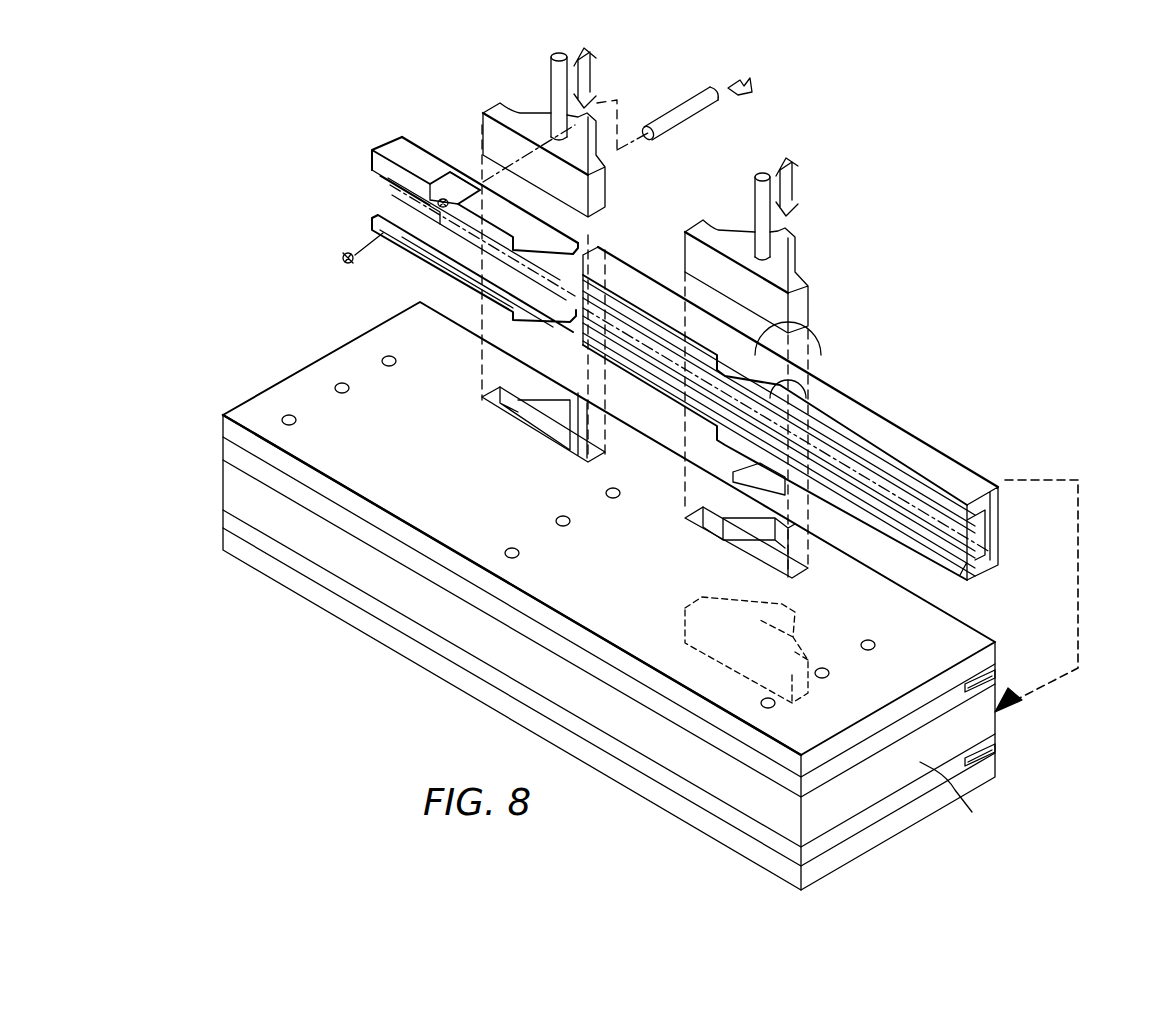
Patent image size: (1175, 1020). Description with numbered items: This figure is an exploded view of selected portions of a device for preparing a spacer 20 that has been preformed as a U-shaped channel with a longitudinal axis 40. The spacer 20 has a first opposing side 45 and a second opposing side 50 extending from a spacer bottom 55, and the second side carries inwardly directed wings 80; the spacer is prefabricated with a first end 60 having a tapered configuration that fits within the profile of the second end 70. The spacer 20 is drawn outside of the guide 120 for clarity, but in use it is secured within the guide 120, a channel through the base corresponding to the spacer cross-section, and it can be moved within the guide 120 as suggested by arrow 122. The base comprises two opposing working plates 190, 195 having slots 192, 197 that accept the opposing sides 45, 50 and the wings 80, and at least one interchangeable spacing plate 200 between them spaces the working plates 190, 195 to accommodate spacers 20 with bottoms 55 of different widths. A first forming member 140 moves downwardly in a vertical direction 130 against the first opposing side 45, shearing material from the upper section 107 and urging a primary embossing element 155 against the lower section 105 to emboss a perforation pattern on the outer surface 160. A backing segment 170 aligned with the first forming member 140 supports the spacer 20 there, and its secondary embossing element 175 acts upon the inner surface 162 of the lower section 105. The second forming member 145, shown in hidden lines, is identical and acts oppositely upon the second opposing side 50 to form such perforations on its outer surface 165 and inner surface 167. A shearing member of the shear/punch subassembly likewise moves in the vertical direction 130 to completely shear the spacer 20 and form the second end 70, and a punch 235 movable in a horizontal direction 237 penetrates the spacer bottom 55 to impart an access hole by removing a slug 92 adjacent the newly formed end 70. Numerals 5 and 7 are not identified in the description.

The guide rail end 5 is at (1025, 588).
The rail end portion 7 is at (985, 572).
The spacer 20 is at (400, 147).
The longitudinal axis 40 is at (1020, 556).
The first opposing side 45 is at (972, 478).
The second opposing side 50 is at (898, 512).
The spacer bottom 55 is at (428, 250).
The first end 60 is at (597, 252).
The second end 70 is at (585, 232).
The wings 80 is at (925, 530).
The slug 92 is at (340, 257).
The lower section 105 is at (770, 360).
The upper section 107 is at (775, 386).
The guide 120 is at (975, 680).
The arrow 122 is at (1080, 604).
The vertical direction 130 is at (594, 80).
The first forming member 140 is at (800, 305).
The second forming member 145 is at (812, 628).
The primary embossing element 155 is at (795, 260).
The outer surface 160 is at (868, 424).
The inner surface 162 is at (790, 333).
The outer surface 165 is at (965, 575).
The inner surface 167 is at (920, 520).
The backing segment 170 is at (790, 548).
The secondary embossing element 175 is at (760, 540).
The working plate 190 is at (967, 707).
The slot 192 is at (975, 690).
The working plate 195 is at (905, 798).
The slot 197 is at (985, 768).
The interchangeable spacing plate 200 is at (922, 765).
The punch 235 is at (698, 102).
The horizontal direction 237 is at (752, 90).